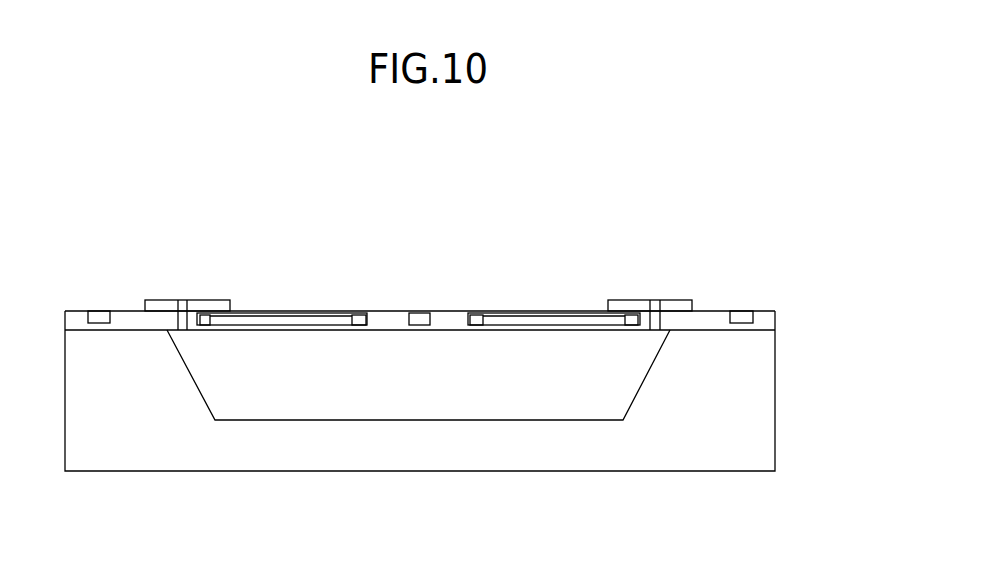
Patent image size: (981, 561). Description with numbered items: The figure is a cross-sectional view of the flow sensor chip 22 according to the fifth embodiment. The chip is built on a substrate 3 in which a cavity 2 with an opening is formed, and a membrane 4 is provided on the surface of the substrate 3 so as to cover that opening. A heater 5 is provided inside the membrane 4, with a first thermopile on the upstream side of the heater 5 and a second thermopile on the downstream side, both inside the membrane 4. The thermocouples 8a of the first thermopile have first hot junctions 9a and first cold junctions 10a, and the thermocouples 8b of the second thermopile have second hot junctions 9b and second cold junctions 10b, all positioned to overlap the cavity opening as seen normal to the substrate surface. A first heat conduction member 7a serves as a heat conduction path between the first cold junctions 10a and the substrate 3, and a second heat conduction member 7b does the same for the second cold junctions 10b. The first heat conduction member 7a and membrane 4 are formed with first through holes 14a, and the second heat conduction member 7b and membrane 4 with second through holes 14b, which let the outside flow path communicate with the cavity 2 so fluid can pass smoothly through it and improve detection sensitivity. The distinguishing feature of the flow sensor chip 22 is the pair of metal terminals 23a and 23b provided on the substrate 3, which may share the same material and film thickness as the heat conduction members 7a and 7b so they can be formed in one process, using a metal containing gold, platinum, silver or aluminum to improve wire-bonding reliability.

The cavity 2 is at (455, 402).
The substrate 3 is at (742, 473).
The membrane 4 is at (781, 316).
The heater 5 is at (417, 311).
The first heat conduction member 7a is at (165, 300).
The second heat conduction member 7b is at (678, 300).
The thermocouples 8a is at (295, 311).
The thermocouples 8b is at (552, 311).
The first hot junctions 9a is at (362, 311).
The second hot junctions 9b is at (477, 311).
The first cold junctions 10a is at (205, 313).
The second cold junctions 10b is at (630, 312).
The first through holes 14a is at (192, 300).
The second through holes 14b is at (638, 300).
The flow sensor chip 22 is at (725, 208).
The metal terminal 23a is at (100, 310).
The metal terminal 23b is at (742, 311).